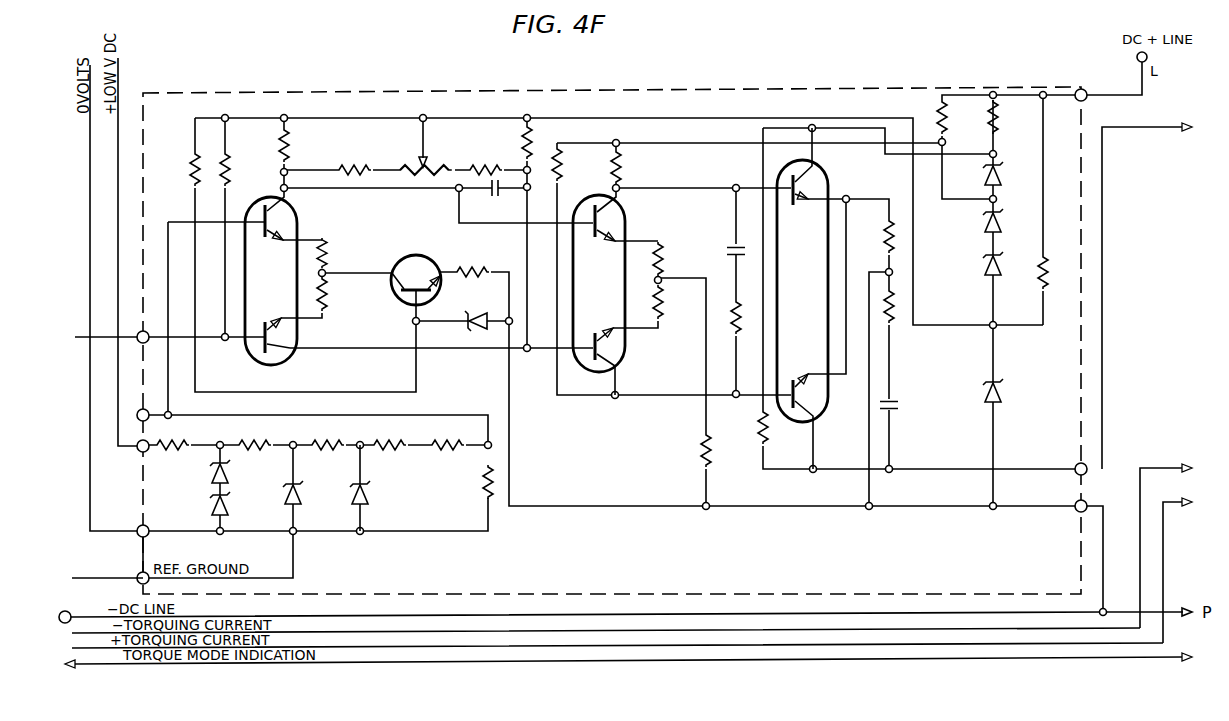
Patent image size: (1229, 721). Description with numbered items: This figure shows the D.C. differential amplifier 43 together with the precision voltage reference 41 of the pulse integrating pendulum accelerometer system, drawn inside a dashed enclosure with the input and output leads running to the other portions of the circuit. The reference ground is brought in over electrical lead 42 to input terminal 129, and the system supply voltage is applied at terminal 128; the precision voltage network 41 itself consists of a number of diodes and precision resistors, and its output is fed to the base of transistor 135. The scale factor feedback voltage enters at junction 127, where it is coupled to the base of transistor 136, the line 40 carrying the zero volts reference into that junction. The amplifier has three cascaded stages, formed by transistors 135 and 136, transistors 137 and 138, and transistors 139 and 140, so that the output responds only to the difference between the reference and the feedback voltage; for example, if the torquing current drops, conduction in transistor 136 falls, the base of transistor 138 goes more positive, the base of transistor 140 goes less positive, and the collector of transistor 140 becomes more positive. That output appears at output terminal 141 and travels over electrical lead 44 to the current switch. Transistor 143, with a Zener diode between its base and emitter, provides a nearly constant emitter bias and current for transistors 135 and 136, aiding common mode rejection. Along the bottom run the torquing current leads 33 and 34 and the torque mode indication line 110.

The electrical lead 33 is at (1156, 467).
The electrical lead 34 is at (1160, 501).
The zero volts input line 40 is at (80, 334).
The precision voltage reference 41 is at (392, 513).
The electrical lead 42 is at (92, 577).
The D.C. differential amplifier 43 is at (510, 84).
The electrical lead 44 is at (1131, 127).
The torque mode indication line 110 is at (928, 659).
The junction 127 is at (140, 334).
The terminal 128 is at (140, 449).
The input terminal 129 is at (140, 574).
The transistor 135 is at (263, 203).
The transistor 136 is at (254, 349).
The transistor 137 is at (612, 216).
The transistor 138 is at (620, 351).
The transistor 139 is at (812, 181).
The transistor 140 is at (815, 406).
The output terminal 141 is at (1088, 466).
The transistor 143 is at (412, 266).